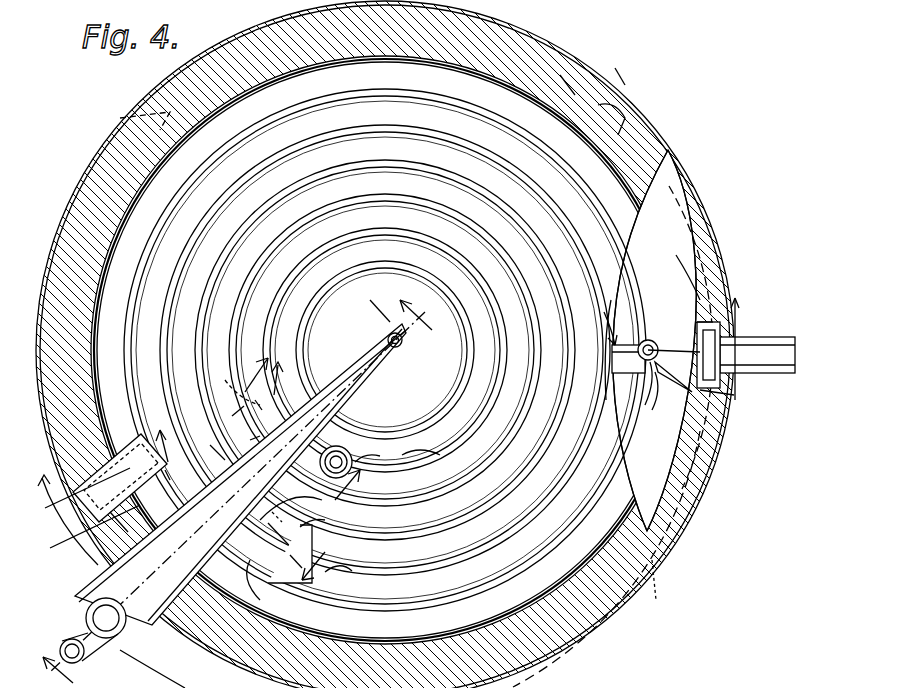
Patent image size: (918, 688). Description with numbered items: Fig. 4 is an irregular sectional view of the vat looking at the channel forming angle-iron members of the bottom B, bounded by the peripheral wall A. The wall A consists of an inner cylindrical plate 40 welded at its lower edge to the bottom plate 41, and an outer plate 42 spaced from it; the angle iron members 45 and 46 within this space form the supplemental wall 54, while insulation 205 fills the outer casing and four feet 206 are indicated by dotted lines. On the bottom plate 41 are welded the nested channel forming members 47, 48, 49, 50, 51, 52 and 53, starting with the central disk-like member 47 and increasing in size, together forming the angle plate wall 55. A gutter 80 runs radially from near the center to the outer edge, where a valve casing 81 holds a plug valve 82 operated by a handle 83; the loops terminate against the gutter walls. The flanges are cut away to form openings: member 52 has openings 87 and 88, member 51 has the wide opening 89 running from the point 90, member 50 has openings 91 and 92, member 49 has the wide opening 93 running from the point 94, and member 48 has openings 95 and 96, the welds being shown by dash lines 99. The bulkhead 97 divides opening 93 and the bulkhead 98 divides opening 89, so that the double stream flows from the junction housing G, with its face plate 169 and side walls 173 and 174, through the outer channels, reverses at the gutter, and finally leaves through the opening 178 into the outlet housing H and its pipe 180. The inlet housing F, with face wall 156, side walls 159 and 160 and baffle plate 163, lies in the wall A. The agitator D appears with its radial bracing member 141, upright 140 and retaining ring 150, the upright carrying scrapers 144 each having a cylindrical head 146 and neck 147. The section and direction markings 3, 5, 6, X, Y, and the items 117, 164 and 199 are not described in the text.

The angle plate wall 55 is at (148, 197).
The feet 206 is at (118, 120).
The inner cylindrical plate 40 is at (654, 340).
The bottom plate 41 is at (648, 222).
The outer plate 42 is at (640, 160).
The angle iron member 45 is at (690, 230).
The angle iron wall 54 is at (705, 246).
The insulation 205 is at (630, 120).
The bottom B is at (572, 82).
The peripheral wall A is at (622, 87).
The central channel forming member 47 is at (370, 270).
The channel forming member 48 is at (300, 298).
The channel forming member 49 is at (440, 240).
The channel forming member 50 is at (492, 228).
The channel forming member 51 is at (503, 198).
The channel forming member 52 is at (545, 183).
The outermost channel forming member 53 is at (570, 152).
The gutter 80 is at (237, 486).
The pivot 117 is at (400, 344).
The pipe 180 is at (350, 450).
The outlet housing H is at (380, 408).
The opening 96 is at (378, 461).
The opening 178 is at (419, 448).
The side wall 173 is at (120, 478).
The side wall 174 is at (126, 522).
The face plate 169 is at (74, 497).
The junction housing G is at (86, 533).
The direction Y is at (59, 520).
The opening 87 is at (179, 482).
The valve casing 81 is at (88, 606).
The plug valve 82 is at (93, 620).
The handle 83 is at (77, 646).
The angle iron member 46 is at (152, 669).
The opening 88 is at (262, 585).
The wide opening 89 is at (300, 554).
The point 90 is at (344, 580).
The opening 92 is at (324, 518).
The bulkhead 98 is at (280, 525).
The tube end 199 is at (260, 572).
The opening 91 is at (211, 458).
The wide opening 93 is at (243, 439).
The point 94 is at (230, 388).
The opening 95 is at (286, 380).
The bulkhead 97 is at (230, 415).
The dash lines 99 is at (260, 405).
The section line 5- 5 is at (236, 494).
The section line 3- 3 is at (306, 429).
The section line 6- 6 is at (236, 507).
The inlet housing F is at (725, 378).
The face wall 156 is at (722, 330).
The side wall 159 is at (712, 318).
The axis X is at (738, 296).
The side wall 160 is at (722, 400).
The seat 164 is at (705, 322).
The upright 140 is at (700, 345).
The retaining ring 150 is at (654, 333).
The baffle plate 163 is at (674, 356).
The agitator D is at (620, 321).
The radial bracing member 141 is at (628, 337).
The scraper 144 is at (678, 400).
The cylindrical head 146 is at (635, 390).
The neck 147 is at (639, 404).